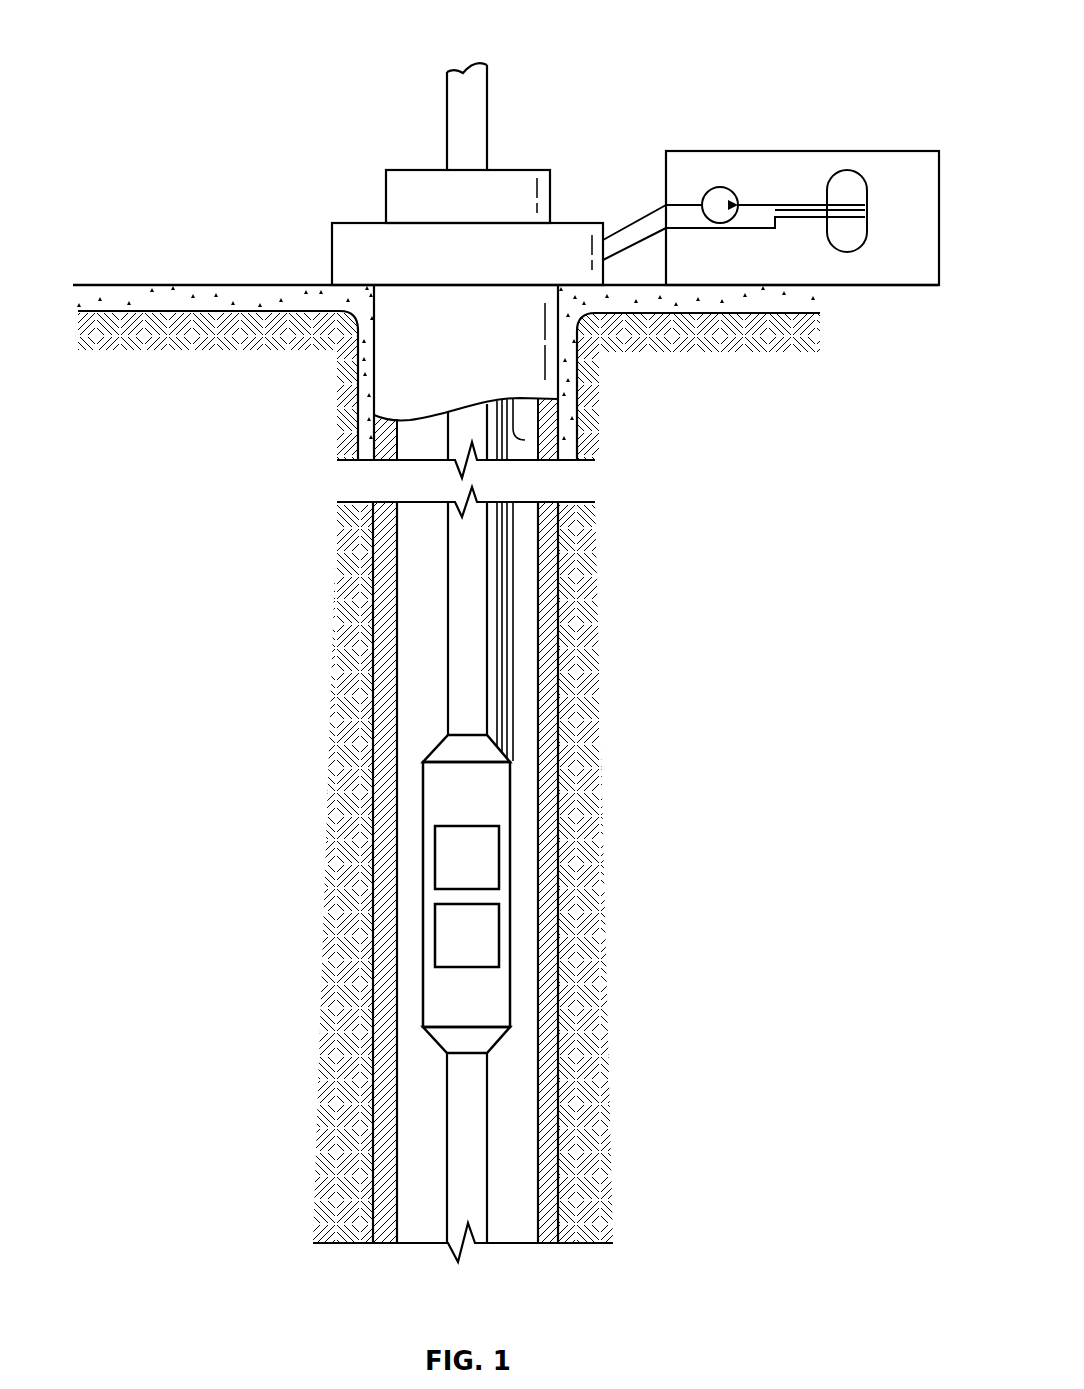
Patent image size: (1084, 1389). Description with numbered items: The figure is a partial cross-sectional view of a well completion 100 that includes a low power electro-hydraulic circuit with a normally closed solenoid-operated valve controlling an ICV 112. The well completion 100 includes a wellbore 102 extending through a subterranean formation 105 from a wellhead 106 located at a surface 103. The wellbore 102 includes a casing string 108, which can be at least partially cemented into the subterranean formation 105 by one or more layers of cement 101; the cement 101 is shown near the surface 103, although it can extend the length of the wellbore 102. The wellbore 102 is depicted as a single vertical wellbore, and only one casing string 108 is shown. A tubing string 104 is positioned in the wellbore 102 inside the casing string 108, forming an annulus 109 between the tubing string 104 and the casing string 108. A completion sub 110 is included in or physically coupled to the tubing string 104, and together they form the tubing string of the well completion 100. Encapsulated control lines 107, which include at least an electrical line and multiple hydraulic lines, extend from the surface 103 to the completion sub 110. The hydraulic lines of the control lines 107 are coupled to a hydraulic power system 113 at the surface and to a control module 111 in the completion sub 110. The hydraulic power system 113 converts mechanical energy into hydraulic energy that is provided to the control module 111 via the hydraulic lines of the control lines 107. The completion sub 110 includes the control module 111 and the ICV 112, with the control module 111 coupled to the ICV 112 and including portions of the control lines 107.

The well completion 100 is at (152, 31).
The cement 101 is at (252, 296).
The wellbore 102 is at (559, 574).
The surface 103 is at (190, 284).
The tubing string 104 is at (447, 556).
The subterranean formation 105 is at (216, 429).
The wellhead 106 is at (585, 214).
The encapsulated control lines 107 is at (530, 441).
The casing string 108 is at (386, 636).
The annulus 109 is at (520, 799).
The completion sub 110 is at (434, 746).
The control module 111 is at (450, 869).
The ICV 112 is at (450, 947).
The hydraulic power system 113 is at (802, 137).